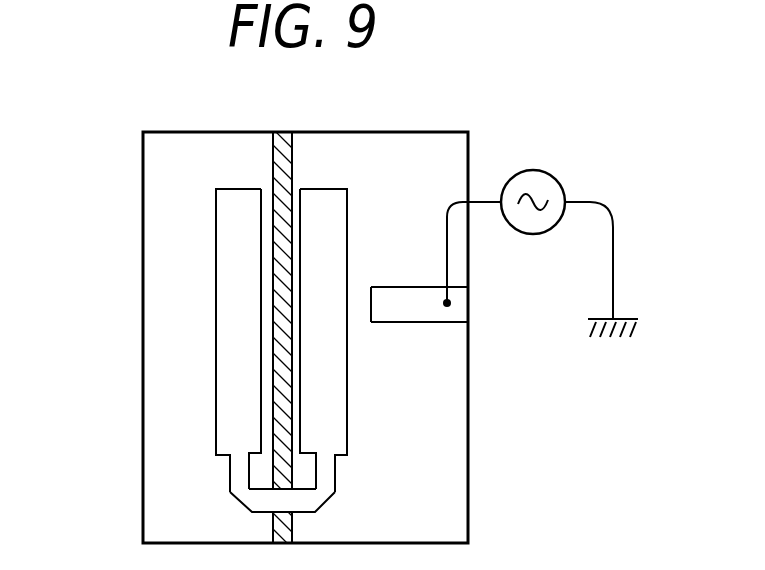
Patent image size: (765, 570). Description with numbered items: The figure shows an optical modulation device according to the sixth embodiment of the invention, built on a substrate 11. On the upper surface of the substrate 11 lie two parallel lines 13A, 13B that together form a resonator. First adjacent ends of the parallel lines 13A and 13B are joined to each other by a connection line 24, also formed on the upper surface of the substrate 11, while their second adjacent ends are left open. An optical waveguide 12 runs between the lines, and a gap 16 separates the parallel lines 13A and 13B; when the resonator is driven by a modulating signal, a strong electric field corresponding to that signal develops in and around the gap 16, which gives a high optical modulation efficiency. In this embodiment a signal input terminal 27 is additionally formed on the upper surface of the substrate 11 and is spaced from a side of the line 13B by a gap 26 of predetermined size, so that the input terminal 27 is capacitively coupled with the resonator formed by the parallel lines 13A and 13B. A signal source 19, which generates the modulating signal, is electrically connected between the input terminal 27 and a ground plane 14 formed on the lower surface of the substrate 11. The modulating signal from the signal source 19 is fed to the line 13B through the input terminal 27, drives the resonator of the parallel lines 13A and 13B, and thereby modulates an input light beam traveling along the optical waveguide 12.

The substrate 11 is at (163, 495).
The optical waveguide 12 is at (275, 252).
The parallel line 13A is at (228, 380).
The parallel line 13B is at (335, 383).
The ground plane 14 is at (630, 318).
The gap 16 is at (266, 312).
The signal source 19 is at (556, 172).
The connection line 24 is at (330, 475).
The gap 26 is at (360, 297).
The signal input terminal 27 is at (395, 297).